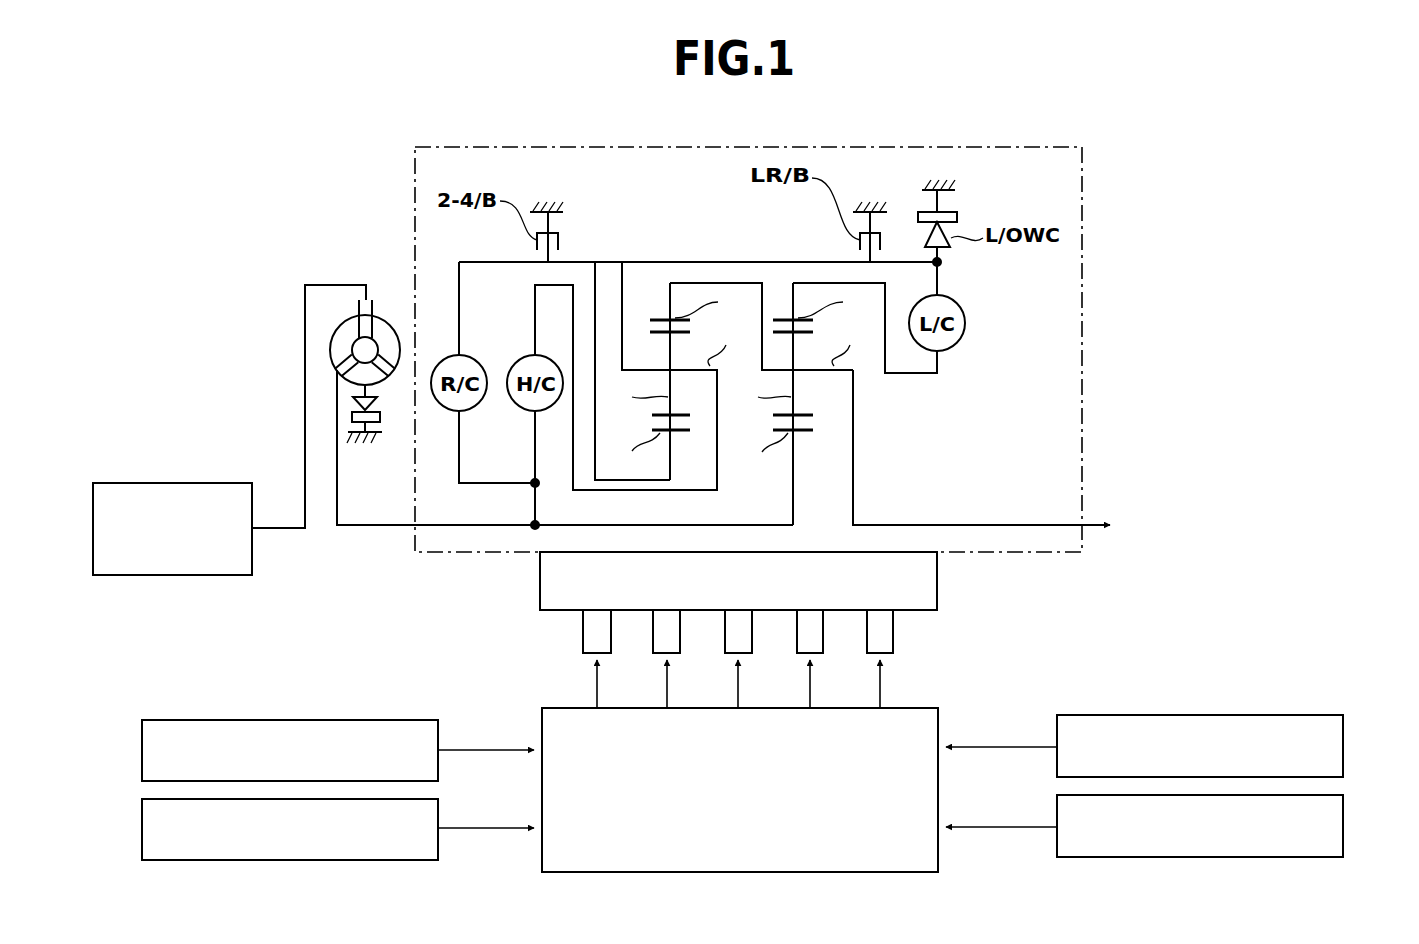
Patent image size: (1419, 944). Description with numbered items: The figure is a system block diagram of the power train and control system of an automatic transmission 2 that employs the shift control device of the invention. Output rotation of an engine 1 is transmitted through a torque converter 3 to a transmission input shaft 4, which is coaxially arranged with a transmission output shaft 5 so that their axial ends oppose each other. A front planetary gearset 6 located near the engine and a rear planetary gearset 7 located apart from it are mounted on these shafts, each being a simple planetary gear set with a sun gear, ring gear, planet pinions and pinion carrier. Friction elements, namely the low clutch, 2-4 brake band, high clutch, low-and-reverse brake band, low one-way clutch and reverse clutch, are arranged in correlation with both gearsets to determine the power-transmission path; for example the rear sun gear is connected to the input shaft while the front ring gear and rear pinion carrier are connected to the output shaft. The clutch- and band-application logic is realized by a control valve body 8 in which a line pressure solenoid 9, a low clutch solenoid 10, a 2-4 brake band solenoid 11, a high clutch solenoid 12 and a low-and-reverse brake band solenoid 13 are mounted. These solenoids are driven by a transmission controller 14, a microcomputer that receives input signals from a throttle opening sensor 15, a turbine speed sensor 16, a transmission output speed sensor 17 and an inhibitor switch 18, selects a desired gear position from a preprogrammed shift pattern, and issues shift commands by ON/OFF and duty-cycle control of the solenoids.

The engine 1 is at (148, 483).
The automatic transmission 2 is at (1092, 193).
The torque converter 3 is at (384, 303).
The transmission input shaft 4 is at (374, 527).
The transmission output shaft 5 is at (976, 523).
The front planetary gearset 6 is at (647, 284).
The rear planetary gearset 7 is at (770, 282).
The control valve body 8 is at (938, 571).
The line pressure solenoid 9 is at (583, 633).
The low clutch solenoid 10 is at (653, 633).
The 2-4 brake band solenoid 11 is at (725, 633).
The high clutch solenoid 12 is at (797, 633).
The low-and-reverse brake band solenoid 13 is at (867, 633).
The transmission controller 14 is at (905, 708).
The throttle opening sensor 15 is at (142, 752).
The turbine speed sensor 16 is at (142, 835).
The transmission output speed sensor 17 is at (1345, 745).
The inhibitor switch 18 is at (1345, 825).